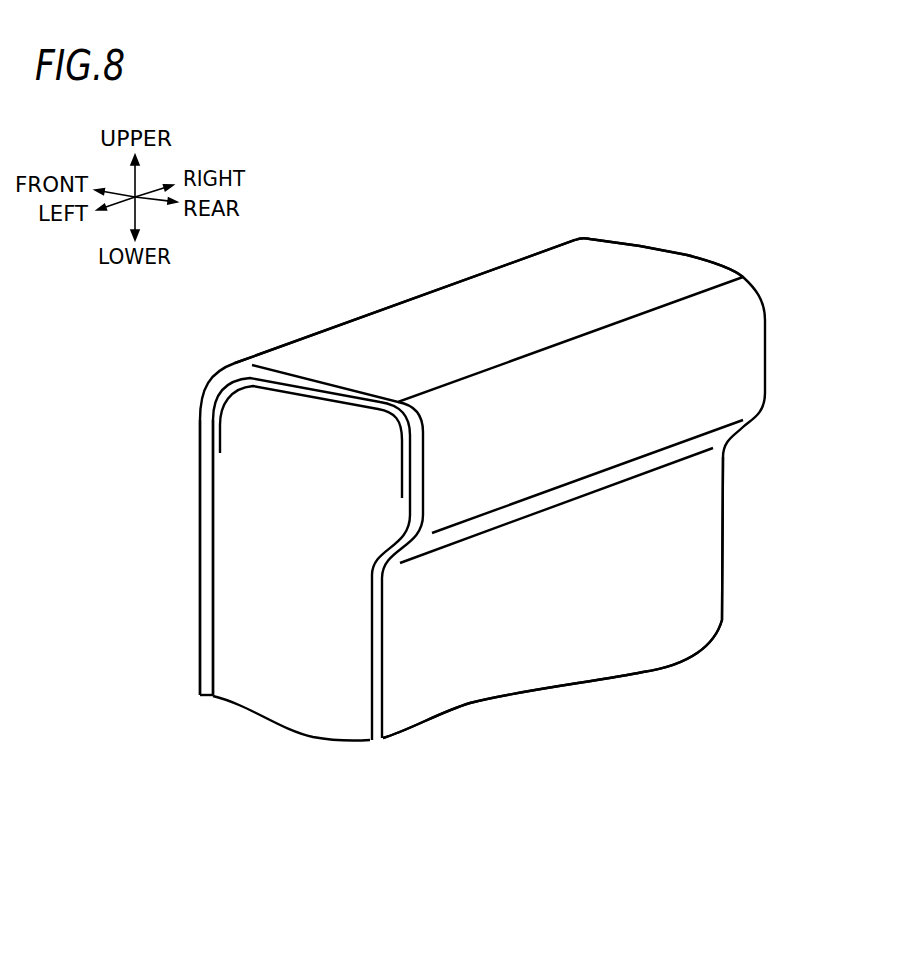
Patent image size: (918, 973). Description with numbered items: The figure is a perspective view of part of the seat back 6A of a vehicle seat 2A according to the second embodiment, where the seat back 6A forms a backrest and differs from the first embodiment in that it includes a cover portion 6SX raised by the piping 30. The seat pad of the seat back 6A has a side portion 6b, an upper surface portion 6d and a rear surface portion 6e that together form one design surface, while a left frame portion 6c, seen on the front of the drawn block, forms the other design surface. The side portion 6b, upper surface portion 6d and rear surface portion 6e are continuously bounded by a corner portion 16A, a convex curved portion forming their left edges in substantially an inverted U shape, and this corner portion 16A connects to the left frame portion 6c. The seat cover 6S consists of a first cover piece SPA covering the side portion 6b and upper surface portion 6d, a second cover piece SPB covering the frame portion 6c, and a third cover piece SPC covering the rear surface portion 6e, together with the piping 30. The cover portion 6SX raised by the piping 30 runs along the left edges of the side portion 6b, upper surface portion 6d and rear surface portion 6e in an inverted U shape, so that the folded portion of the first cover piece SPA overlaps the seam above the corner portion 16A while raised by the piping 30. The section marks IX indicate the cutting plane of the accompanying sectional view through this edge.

The vehicle seat 2A is at (700, 187).
The seat back 6A is at (697, 252).
The seat cover 6S is at (478, 527).
The first cover piece SPA is at (497, 313).
The second cover piece SPB is at (311, 604).
The third cover piece SPC is at (563, 600).
The upper surface portion 6d is at (515, 320).
The left frame portion 6c is at (311, 559).
The rear surface portion 6e is at (585, 584).
The side portion 6b is at (200, 483).
The cover portion 6SX is at (130, 557).
The piping 30 is at (200, 596).
The corner portion 16A is at (357, 405).
The section line IX is at (323, 310).